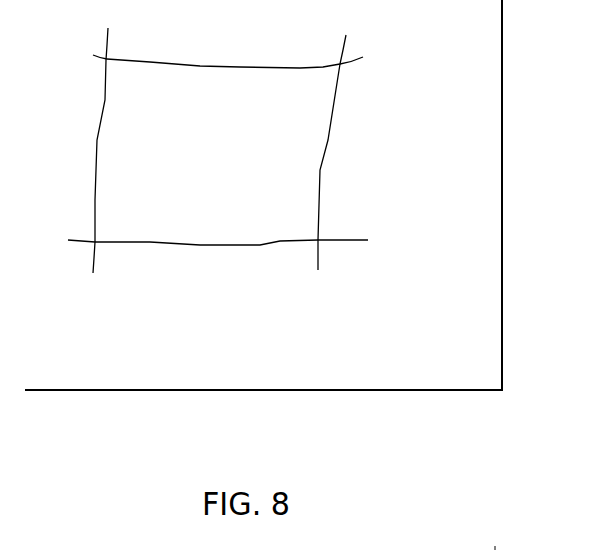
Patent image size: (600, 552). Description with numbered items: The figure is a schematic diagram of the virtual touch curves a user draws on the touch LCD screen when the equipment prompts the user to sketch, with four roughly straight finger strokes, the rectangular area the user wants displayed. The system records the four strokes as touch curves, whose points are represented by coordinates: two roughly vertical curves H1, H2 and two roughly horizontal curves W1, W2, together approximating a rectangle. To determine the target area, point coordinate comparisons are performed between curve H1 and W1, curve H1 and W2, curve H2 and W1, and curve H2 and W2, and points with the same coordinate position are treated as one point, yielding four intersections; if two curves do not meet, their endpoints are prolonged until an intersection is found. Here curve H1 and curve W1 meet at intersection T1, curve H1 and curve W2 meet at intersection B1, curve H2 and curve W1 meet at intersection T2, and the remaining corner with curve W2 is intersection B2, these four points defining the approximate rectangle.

The intersection T1 is at (80, 35).
The intersection T2 is at (361, 45).
The intersection B1 is at (67, 259).
The intersection B2 is at (343, 256).
The touch curve W1 is at (223, 55).
The touch curve W2 is at (206, 259).
The touch curve H1 is at (89, 151).
The touch curve H2 is at (338, 152).